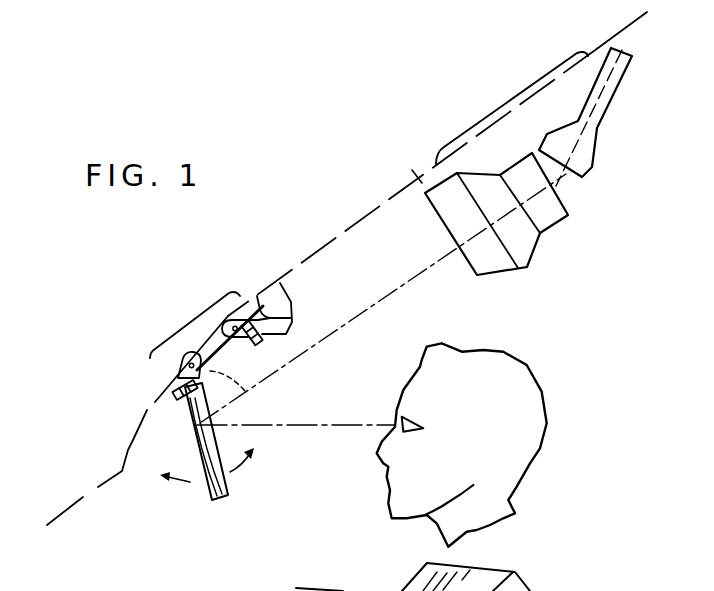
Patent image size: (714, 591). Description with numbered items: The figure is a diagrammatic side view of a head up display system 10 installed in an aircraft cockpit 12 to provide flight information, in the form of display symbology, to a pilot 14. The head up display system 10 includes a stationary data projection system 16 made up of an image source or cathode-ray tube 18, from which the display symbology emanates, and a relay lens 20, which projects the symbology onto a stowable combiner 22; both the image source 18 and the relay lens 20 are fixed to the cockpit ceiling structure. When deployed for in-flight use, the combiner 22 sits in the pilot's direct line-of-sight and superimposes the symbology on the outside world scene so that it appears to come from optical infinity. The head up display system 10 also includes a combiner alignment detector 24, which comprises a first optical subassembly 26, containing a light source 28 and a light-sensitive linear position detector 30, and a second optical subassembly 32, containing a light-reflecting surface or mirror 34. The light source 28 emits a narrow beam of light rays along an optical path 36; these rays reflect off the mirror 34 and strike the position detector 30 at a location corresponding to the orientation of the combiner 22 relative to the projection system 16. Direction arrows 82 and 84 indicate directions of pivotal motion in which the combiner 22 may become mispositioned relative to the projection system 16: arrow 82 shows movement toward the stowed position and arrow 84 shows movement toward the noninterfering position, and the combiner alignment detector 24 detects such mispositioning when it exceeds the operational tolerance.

The head up display system 10 is at (150, 527).
The aircraft cockpit 12 is at (110, 479).
The pilot 14 is at (540, 448).
The stationary data projection system 16 is at (518, 97).
The cathode-ray tube (CRT) image source 18 is at (596, 123).
The relay lens 20 is at (553, 232).
The stowable combiner 22 is at (218, 502).
The combiner alignment detector 24 is at (202, 318).
The first optical subassembly 26 is at (276, 311).
The light source 28 is at (293, 317).
The light-sensitive linear position detector 30 is at (258, 340).
The second optical subassembly 32 is at (162, 395).
The mirror 34 is at (178, 397).
The optical path 36 is at (248, 393).
The direction arrow 82 is at (243, 470).
The direction arrow 84 is at (188, 480).